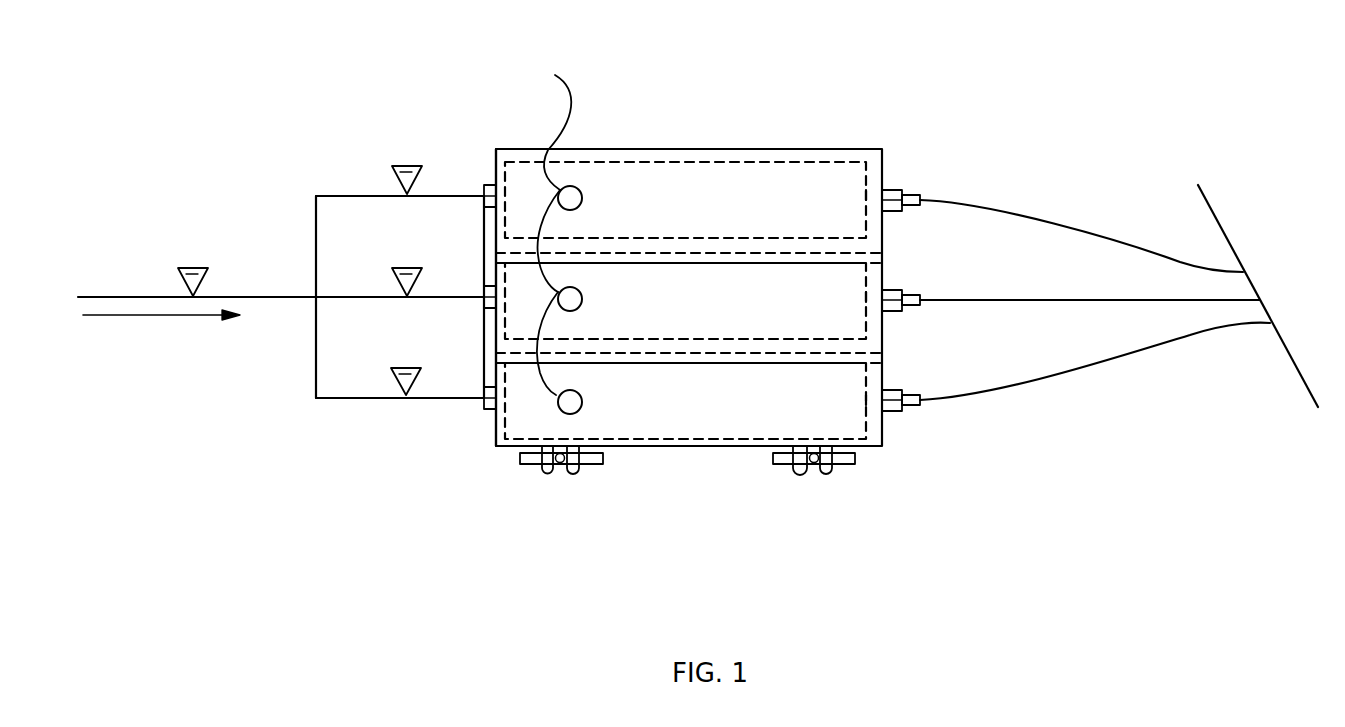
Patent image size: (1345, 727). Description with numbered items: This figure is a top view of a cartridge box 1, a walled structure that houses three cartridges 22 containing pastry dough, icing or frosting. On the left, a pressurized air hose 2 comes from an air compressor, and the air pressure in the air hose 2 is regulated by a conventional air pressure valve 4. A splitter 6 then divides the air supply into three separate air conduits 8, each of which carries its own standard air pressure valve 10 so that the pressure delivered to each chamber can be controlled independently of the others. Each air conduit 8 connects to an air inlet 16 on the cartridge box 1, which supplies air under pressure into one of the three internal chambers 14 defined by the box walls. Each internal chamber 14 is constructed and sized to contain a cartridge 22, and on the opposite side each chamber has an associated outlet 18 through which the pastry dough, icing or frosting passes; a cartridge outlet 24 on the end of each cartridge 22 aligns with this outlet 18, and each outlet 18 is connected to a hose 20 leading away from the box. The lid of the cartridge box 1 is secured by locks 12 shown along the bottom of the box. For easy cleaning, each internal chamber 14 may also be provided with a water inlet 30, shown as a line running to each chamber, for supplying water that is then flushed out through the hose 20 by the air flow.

The cartridge box 1 is at (658, 106).
The pressurized air hose 2 is at (113, 296).
The air pressure valve 4 is at (195, 268).
The splitter 6 is at (316, 262).
The air conduits 8 is at (328, 196).
The air pressure valve 10 is at (394, 176).
The locks 12 is at (572, 474).
The internal chambers 14 is at (497, 150).
The air inlet 16 is at (483, 204).
The outlet 18 is at (908, 190).
The hose 20 is at (1063, 223).
The cartridges 22 is at (693, 290).
The cartridge outlet 24 is at (866, 194).
The water inlet 30 is at (550, 233).